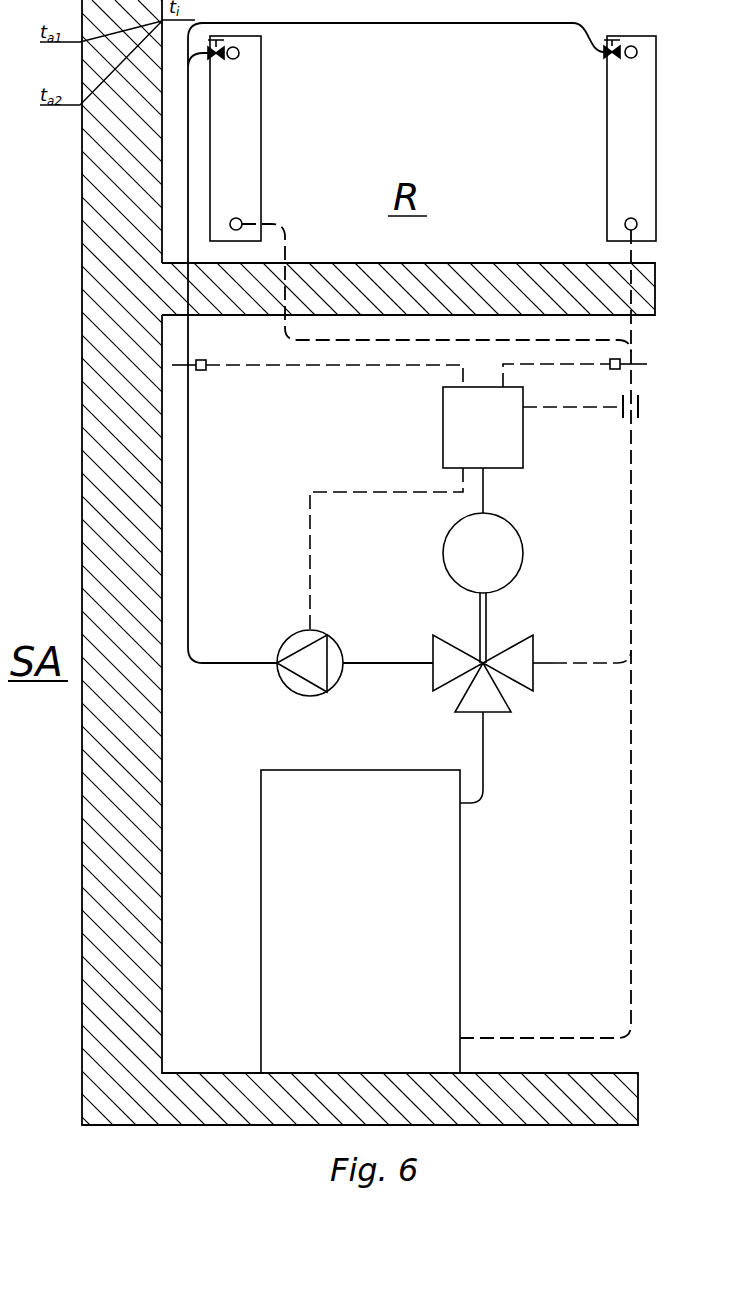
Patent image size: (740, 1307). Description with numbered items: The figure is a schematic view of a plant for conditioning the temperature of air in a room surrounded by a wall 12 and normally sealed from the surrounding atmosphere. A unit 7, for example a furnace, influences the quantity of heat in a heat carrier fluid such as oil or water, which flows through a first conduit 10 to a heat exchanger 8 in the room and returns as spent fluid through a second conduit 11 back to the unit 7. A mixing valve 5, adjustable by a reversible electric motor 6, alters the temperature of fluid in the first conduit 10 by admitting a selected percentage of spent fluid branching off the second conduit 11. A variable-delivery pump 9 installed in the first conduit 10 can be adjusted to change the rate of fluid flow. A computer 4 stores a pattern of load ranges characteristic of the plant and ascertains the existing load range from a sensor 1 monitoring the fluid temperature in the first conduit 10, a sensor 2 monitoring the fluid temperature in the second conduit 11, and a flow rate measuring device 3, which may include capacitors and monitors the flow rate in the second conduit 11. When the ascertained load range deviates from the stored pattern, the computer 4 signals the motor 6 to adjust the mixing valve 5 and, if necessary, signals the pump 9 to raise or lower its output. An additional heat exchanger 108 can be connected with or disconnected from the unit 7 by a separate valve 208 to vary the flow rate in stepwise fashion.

The sensor 1 is at (204, 370).
The sensor 2 is at (640, 360).
The flow rate measuring device 3 is at (638, 413).
The computer 4 is at (510, 450).
The mixing valve 5 is at (497, 700).
The reversible electric motor 6 is at (511, 565).
The unit 7 is at (438, 920).
The heat exchanger 8 is at (248, 134).
The variable-delivery pump 9 is at (290, 645).
The first conduit 10 is at (195, 470).
The second conduit 11 is at (633, 556).
The wall 12 is at (152, 758).
The additional heat exchanger 108 is at (627, 187).
The valve 208 is at (218, 60).